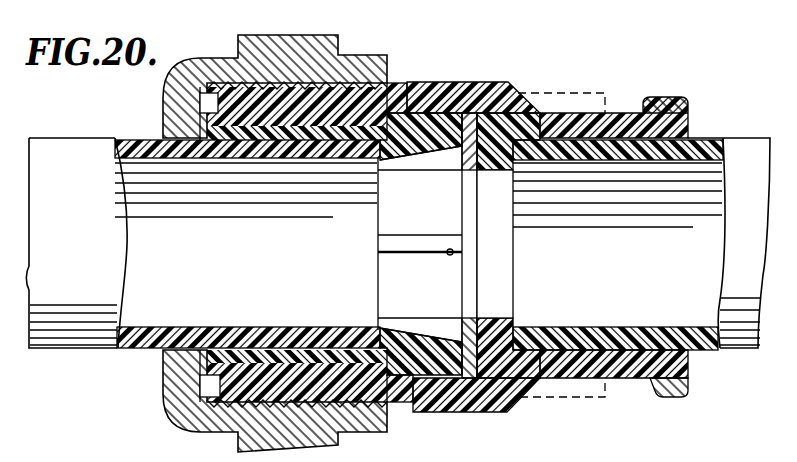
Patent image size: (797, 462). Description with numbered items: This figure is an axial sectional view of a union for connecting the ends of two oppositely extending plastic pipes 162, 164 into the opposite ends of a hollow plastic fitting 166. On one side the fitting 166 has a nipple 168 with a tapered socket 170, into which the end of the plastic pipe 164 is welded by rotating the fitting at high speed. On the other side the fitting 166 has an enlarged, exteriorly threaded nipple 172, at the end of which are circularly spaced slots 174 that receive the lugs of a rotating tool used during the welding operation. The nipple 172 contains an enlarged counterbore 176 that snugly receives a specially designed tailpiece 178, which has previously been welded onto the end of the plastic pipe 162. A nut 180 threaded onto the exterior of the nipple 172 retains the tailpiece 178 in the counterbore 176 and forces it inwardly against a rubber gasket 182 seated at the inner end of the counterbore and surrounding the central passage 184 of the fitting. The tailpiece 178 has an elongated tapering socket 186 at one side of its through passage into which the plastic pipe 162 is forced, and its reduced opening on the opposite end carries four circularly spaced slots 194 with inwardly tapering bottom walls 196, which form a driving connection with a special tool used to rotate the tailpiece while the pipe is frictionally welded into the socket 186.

The plastic pipe 162 is at (85, 153).
The plastic pipe 164 is at (740, 147).
The hollow plastic fitting 166 is at (458, 92).
The nipple 168 is at (557, 123).
The tapered socket 170 is at (593, 137).
The enlarged nipple 172 is at (240, 86).
The circularly spaced slots 174 is at (215, 93).
The enlarged counterbore 176 is at (388, 70).
The tailpiece 178 is at (377, 130).
The nut 180 is at (277, 36).
The rubber gasket 182 is at (480, 392).
The central passage 184 is at (500, 295).
The elongated tapering socket 186 is at (263, 328).
The circularly spaced slots 194 is at (380, 252).
The inwardly tapering bottom walls 196 is at (398, 160).